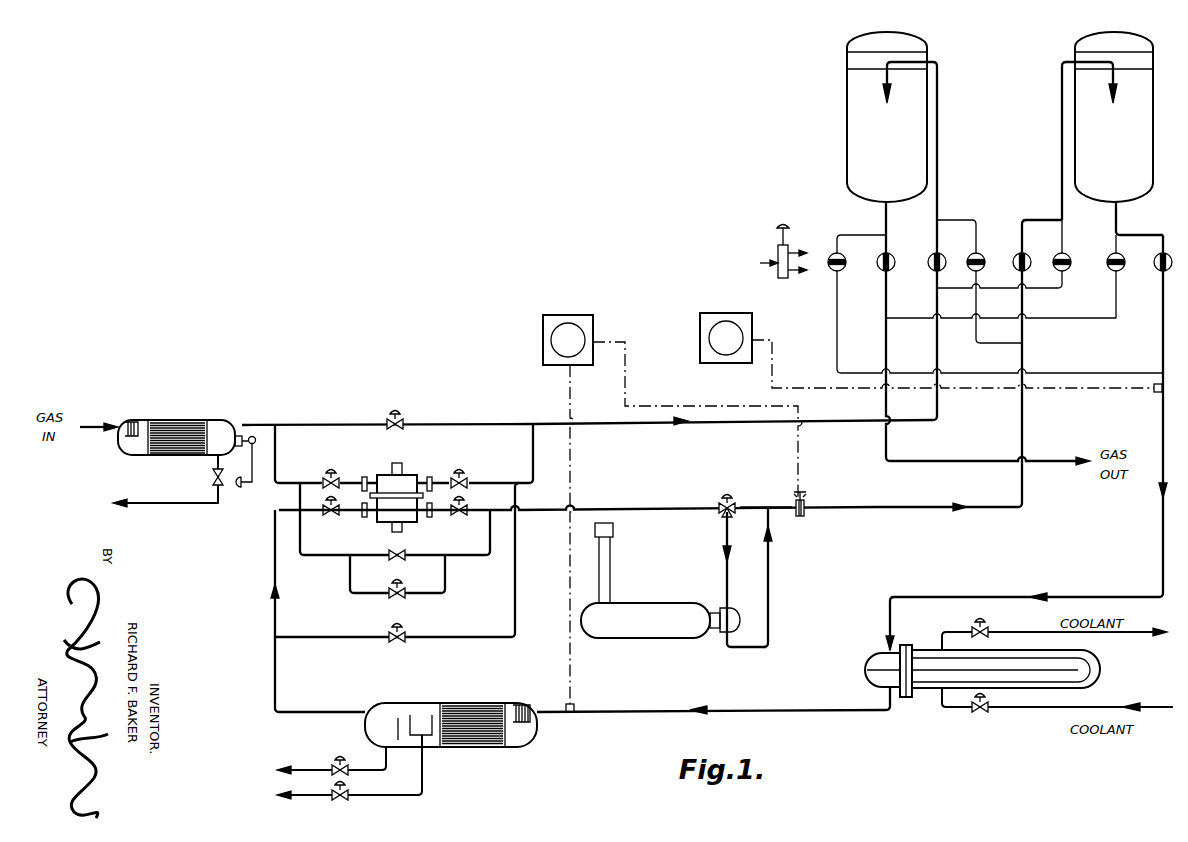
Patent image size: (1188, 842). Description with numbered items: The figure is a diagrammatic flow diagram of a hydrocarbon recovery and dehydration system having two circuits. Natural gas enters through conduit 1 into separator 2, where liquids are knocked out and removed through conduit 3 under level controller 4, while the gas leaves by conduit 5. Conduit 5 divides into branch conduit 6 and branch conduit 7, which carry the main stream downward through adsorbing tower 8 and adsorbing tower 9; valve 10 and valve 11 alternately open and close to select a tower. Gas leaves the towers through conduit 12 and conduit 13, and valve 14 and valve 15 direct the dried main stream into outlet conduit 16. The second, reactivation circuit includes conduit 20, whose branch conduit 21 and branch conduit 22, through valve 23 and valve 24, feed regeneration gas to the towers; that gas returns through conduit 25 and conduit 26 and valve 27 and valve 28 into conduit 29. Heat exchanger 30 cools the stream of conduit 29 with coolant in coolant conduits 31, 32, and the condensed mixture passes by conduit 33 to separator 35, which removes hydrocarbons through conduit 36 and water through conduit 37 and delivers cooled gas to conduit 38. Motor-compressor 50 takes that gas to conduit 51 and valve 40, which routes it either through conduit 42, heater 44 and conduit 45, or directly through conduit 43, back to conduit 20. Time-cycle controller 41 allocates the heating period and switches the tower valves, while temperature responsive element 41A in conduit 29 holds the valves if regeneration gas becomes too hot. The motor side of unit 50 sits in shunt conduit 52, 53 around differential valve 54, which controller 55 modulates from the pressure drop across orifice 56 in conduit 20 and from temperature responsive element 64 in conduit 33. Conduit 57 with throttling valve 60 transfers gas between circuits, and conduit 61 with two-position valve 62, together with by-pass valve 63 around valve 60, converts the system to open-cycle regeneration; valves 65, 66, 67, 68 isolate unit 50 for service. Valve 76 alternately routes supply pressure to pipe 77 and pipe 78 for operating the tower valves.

The conduit 1 is at (96, 424).
The separator 2 is at (188, 420).
The conduit 3 is at (178, 500).
The level controller 4 is at (255, 447).
The conduit 5 is at (270, 424).
The branch conduit 6 is at (937, 110).
The branch conduit 7 is at (1060, 100).
The adsorbing tower 8 is at (887, 117).
The adsorbing tower 9 is at (1114, 117).
The valve 10 is at (930, 262).
The valve 11 is at (1072, 264).
The conduit 12 is at (886, 221).
The conduit 13 is at (1120, 223).
The valve 14 is at (884, 272).
The valve 15 is at (1120, 272).
The conduit 16 is at (884, 362).
The conduit 20 is at (878, 506).
The branch conduit 21 is at (990, 345).
The branch conduit 22 is at (1026, 336).
The valve 23 is at (978, 254).
The valve 24 is at (1016, 260).
The conduit 25 is at (1130, 375).
The conduit 26 is at (1160, 355).
The valve 27 is at (843, 258).
The valve 28 is at (1157, 261).
The conduit 29 is at (1162, 578).
The heat exchanger 30 is at (1100, 679).
The coolant conduit 31 is at (1020, 710).
The coolant conduit 32 is at (1030, 630).
The conduit 33 is at (750, 710).
The separator 35 is at (468, 702).
The conduit 36 is at (424, 768).
The conduit 37 is at (360, 766).
The conduit 38 is at (281, 700).
The valve 40 is at (724, 490).
The time-cycle controller 41 is at (700, 341).
The temperature responsive element 41A is at (1157, 392).
The conduit 42 is at (726, 585).
The conduit 43 is at (768, 507).
The heater 44 is at (657, 640).
The conduit 45 is at (772, 559).
The motor-compressor 50 is at (408, 470).
The conduit 51 is at (641, 506).
The shunt conduit 52 is at (277, 468).
The shunt conduit 53 is at (533, 432).
The differential valve 54 is at (386, 420).
The controller 55 is at (543, 341).
The orifice 56 is at (806, 500).
The conduit 57 is at (332, 560).
The throttling valve 60 is at (401, 550).
The conduit 61 is at (490, 640).
The two-position valve 62 is at (390, 643).
The valve 63 is at (387, 598).
The temperature responsive element 64 is at (574, 708).
The valve 65 is at (338, 516).
The valve 66 is at (337, 482).
The valve 67 is at (464, 482).
The valve 68 is at (466, 516).
The valve 76 is at (778, 254).
The pipe 77 is at (796, 255).
The pipe 78 is at (795, 276).